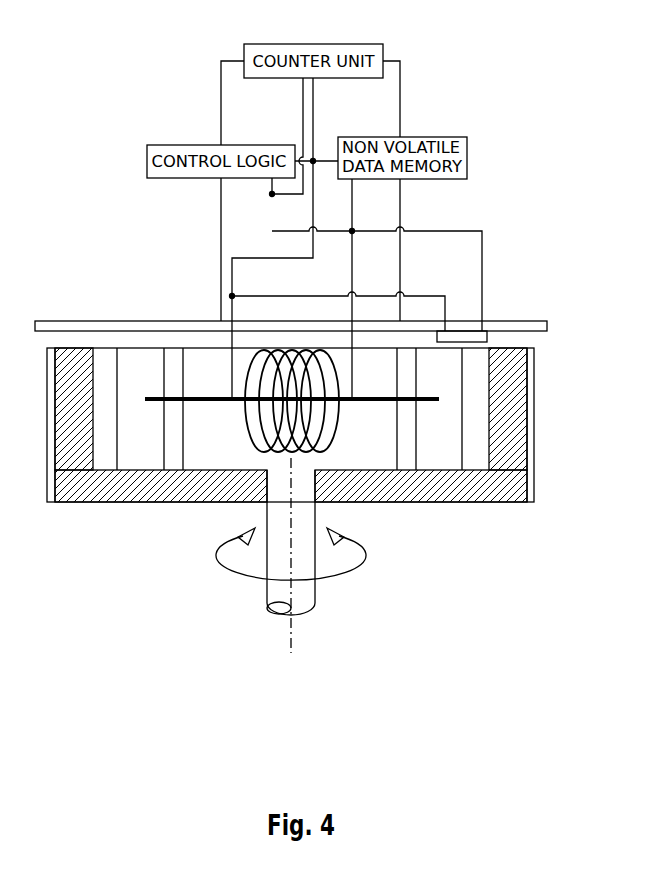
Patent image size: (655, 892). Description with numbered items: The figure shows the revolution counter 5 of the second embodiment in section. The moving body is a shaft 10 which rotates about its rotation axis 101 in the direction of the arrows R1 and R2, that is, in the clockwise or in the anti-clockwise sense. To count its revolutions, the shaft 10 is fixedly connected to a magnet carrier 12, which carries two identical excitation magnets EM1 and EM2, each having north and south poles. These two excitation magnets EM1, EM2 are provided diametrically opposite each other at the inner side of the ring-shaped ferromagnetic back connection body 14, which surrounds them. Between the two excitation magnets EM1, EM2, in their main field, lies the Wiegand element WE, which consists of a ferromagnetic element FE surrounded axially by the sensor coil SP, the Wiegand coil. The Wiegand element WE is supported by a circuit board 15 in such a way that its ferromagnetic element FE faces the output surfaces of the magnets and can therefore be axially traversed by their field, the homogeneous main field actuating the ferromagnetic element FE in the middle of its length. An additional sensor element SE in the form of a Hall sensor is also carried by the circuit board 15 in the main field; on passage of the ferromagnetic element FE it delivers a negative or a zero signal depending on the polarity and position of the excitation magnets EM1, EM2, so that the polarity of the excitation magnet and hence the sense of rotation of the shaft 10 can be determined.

The sensor arrangement 5 is at (6, 291).
The circuit board 15 is at (185, 325).
The back connection body 14 is at (45, 459).
The magnet carrier 12 is at (150, 480).
The shaft 10 is at (308, 597).
The rotation axis 101 is at (290, 627).
The excitation magnet EM1 is at (72, 353).
The excitation magnet EM2 is at (530, 392).
The ferromagnetic element FE is at (202, 398).
The Wiegand coil SP is at (330, 412).
The additional sensor element SE is at (465, 333).
The Wiegand element WE is at (362, 460).
The arrow R1 is at (274, 554).
The arrow R2 is at (364, 545).